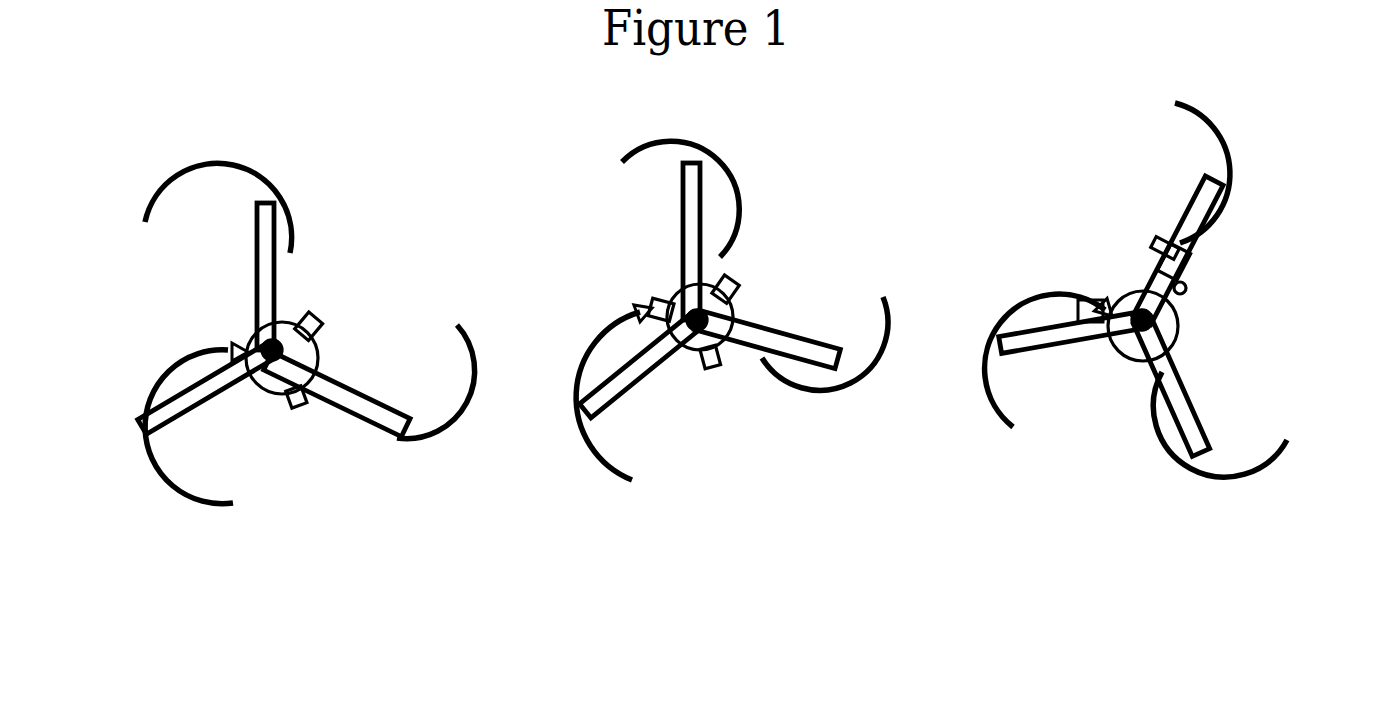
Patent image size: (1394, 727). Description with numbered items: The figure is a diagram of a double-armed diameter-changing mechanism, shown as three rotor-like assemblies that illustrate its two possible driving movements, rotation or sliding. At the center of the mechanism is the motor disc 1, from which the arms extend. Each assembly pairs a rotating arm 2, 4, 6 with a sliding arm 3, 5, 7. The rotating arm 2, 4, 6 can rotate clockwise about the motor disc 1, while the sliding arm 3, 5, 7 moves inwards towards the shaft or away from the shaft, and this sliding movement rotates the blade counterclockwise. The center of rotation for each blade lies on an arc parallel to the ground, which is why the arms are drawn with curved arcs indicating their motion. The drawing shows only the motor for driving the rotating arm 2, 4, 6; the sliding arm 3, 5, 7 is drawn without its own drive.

The motor disc 1 is at (266, 347).
The rotating arm 2 is at (245, 392).
The sliding arm 3 is at (302, 290).
The rotating arm 4 is at (680, 246).
The sliding arm 5 is at (741, 260).
The rotating arm 6 is at (1174, 211).
The sliding arm 7 is at (1348, 268).